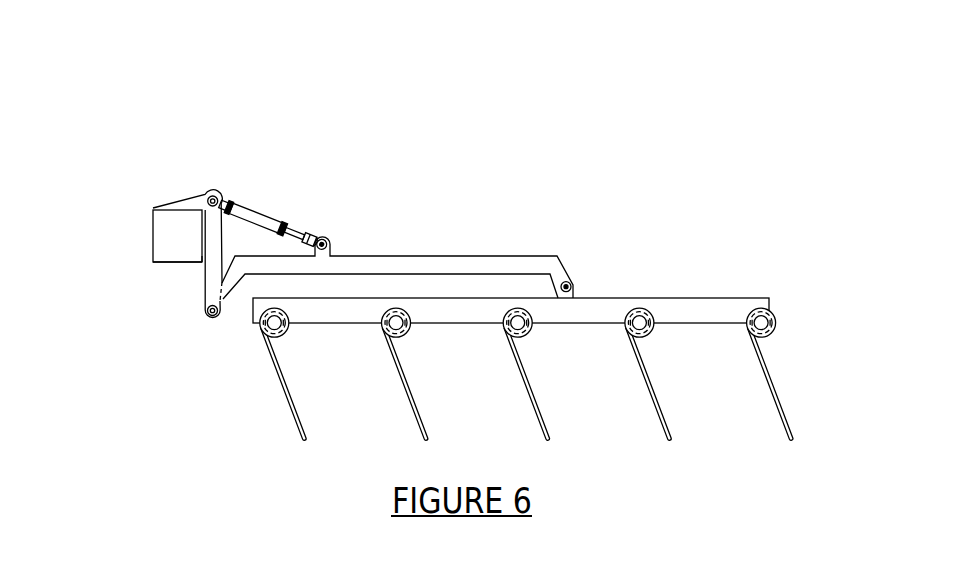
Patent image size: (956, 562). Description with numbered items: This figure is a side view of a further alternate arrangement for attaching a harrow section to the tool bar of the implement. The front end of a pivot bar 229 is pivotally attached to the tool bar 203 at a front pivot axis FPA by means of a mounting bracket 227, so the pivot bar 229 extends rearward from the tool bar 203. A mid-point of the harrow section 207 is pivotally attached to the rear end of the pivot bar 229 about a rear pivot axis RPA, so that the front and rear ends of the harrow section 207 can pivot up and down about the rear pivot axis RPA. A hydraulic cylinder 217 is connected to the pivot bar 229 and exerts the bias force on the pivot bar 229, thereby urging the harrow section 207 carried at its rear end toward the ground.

The tool bar 203 is at (152, 228).
The mounting bracket 227 is at (202, 266).
The hydraulic cylinder 217 is at (268, 208).
The pivot bar 229 is at (417, 255).
The harrow section 207 is at (703, 298).
The rear pivot axis RPA is at (572, 284).
The front pivot axis FPA is at (205, 313).